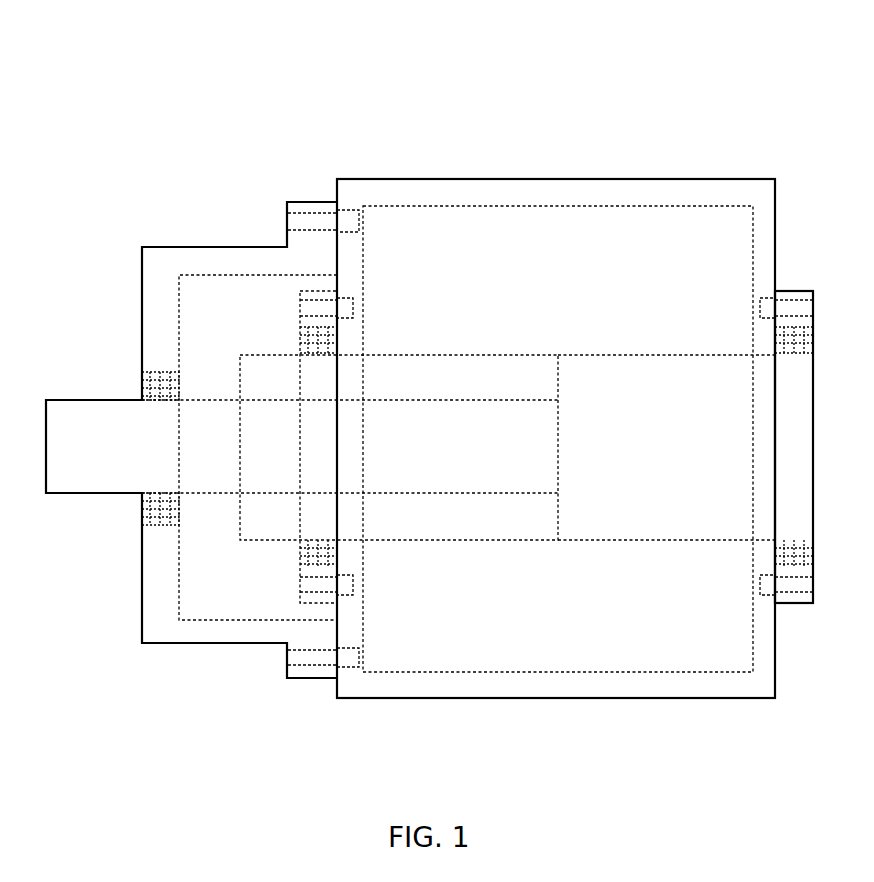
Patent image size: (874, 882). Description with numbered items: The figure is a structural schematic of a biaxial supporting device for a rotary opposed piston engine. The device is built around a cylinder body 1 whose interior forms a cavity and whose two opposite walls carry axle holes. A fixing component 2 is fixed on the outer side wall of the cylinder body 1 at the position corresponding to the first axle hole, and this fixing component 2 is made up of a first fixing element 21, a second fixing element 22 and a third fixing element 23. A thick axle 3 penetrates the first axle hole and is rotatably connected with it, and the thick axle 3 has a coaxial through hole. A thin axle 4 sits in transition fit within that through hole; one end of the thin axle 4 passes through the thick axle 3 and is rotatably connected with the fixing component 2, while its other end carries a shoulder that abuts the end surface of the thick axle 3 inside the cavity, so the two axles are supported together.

The cylinder body 1 is at (455, 698).
The fixing component 2 is at (585, 66).
The first fixing element 21 is at (330, 292).
The second fixing element 22 is at (300, 201).
The third fixing element 23 is at (797, 291).
The thick axle 3 is at (513, 541).
The thin axle 4 is at (130, 400).